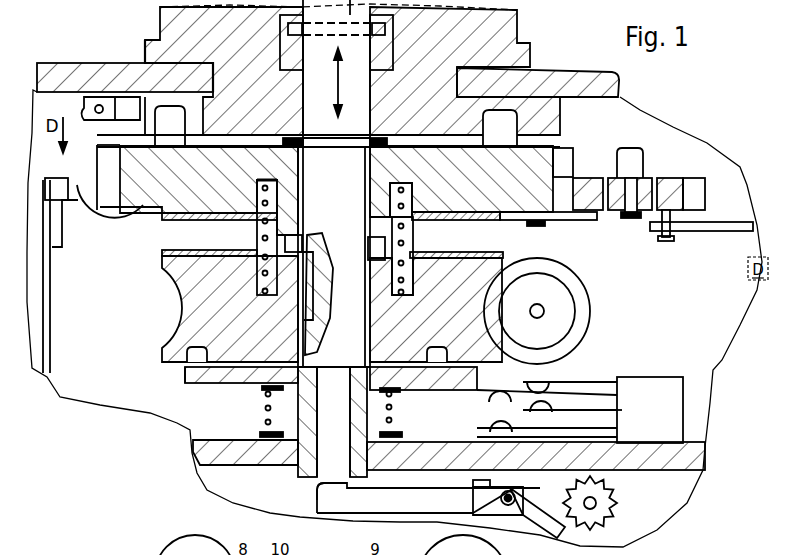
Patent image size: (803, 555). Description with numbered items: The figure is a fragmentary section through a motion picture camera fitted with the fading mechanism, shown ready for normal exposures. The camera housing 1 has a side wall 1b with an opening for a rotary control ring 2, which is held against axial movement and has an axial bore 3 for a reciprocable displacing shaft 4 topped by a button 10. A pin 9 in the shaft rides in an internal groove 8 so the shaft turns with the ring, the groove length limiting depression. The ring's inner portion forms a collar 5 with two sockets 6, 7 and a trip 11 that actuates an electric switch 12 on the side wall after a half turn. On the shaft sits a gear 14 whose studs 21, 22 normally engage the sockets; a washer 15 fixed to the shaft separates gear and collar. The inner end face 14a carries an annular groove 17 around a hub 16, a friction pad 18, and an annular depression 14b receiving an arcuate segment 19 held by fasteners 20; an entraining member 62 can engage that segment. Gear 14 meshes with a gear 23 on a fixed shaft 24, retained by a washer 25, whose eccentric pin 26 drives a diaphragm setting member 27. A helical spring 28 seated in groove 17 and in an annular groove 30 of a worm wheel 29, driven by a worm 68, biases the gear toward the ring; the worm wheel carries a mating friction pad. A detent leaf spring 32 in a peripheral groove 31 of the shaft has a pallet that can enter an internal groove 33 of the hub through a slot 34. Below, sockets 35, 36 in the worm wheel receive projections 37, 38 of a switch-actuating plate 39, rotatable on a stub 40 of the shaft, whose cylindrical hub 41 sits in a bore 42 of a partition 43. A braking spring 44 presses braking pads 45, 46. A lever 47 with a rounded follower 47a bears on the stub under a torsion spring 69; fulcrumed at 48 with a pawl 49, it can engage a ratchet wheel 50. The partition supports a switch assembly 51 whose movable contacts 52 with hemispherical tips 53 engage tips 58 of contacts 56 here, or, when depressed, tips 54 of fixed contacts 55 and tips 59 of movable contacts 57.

The housing 1 is at (714, 404).
The side wall 1b is at (560, 92).
The rotary control ring 2 is at (315, 69).
The axial bore 3 is at (304, 100).
The displacing shaft 4 is at (355, 105).
The collar 5 is at (162, 65).
The socket 6 is at (108, 79).
The socket 7 is at (530, 88).
The internal groove 8 is at (280, 60).
The pin 9 is at (393, 37).
The button 10 is at (276, 37).
The trip 11 is at (520, 113).
The electric switch 12 is at (125, 65).
The gear 14 is at (580, 168).
The inner end face 14a is at (197, 210).
The annular depression 14b is at (94, 196).
The washer 15 is at (338, 142).
The annular hub 16 is at (385, 222).
The annular groove 17 is at (372, 191).
The friction pad 18 is at (165, 217).
The arcuate segment 19 is at (516, 218).
The fasteners 20 is at (539, 227).
The projection 21 is at (152, 135).
The projection 22 is at (563, 165).
The gear 23 is at (690, 178).
The fixed shaft 24 is at (638, 165).
The washer 25 is at (617, 218).
The eccentric pin 26 is at (664, 232).
The diaphragm setting member 27 is at (697, 232).
The helical spring 28 is at (272, 197).
The worm wheel 29 is at (180, 270).
The annular groove 30 is at (259, 253).
The peripheral groove 31 is at (306, 252).
The detent leaf spring 32 is at (323, 298).
The internal annular groove 33 is at (292, 218).
The axially parallel slot 34 is at (377, 257).
The socket 35 is at (185, 365).
The socket 36 is at (440, 352).
The projection 37 is at (190, 380).
The projection 38 is at (418, 362).
The switch-actuating plate 39 is at (222, 380).
The stub 40 is at (295, 455).
The cylindrical hub 41 is at (262, 460).
The bore 42 is at (326, 447).
The partition 43 is at (233, 462).
The braking spring 44 is at (262, 407).
The braking pad 45 is at (396, 392).
The braking pad 46 is at (395, 437).
The lever 47 is at (325, 503).
The rounded follower 47a is at (340, 487).
The fulcrum 48 is at (523, 490).
The pawl 49 is at (545, 525).
The ratchet wheel 50 is at (604, 496).
The switch assembly 51 is at (667, 393).
The resilient movable contacts 52 is at (466, 389).
The hemispherical tips 53 is at (494, 396).
The tips 54 is at (470, 436).
The fixed contacts 55 is at (493, 428).
The contacts 56 is at (620, 368).
The resilient movable contacts 57 is at (600, 413).
The tips 58 is at (549, 380).
The tips 59 is at (588, 383).
The entraining member 62 is at (54, 235).
The worm 68 is at (560, 303).
The torsion spring 69 is at (525, 514).